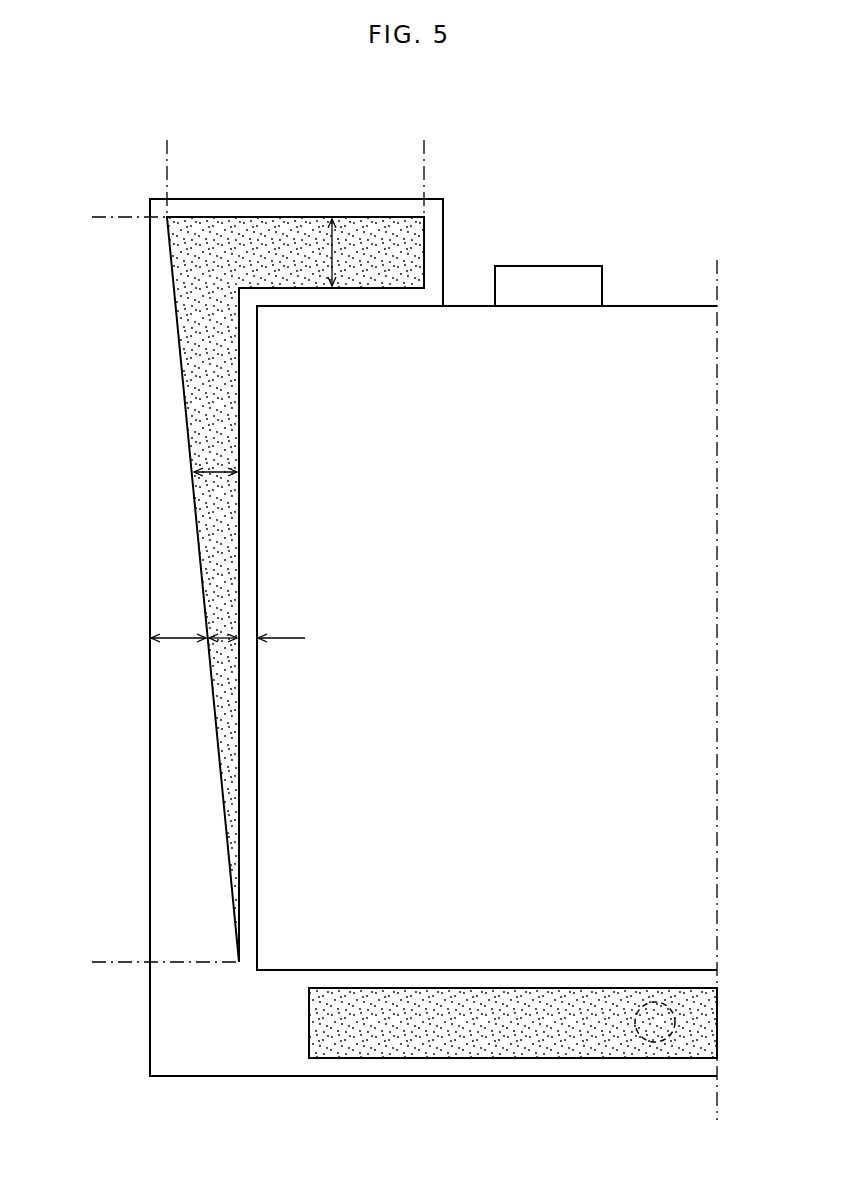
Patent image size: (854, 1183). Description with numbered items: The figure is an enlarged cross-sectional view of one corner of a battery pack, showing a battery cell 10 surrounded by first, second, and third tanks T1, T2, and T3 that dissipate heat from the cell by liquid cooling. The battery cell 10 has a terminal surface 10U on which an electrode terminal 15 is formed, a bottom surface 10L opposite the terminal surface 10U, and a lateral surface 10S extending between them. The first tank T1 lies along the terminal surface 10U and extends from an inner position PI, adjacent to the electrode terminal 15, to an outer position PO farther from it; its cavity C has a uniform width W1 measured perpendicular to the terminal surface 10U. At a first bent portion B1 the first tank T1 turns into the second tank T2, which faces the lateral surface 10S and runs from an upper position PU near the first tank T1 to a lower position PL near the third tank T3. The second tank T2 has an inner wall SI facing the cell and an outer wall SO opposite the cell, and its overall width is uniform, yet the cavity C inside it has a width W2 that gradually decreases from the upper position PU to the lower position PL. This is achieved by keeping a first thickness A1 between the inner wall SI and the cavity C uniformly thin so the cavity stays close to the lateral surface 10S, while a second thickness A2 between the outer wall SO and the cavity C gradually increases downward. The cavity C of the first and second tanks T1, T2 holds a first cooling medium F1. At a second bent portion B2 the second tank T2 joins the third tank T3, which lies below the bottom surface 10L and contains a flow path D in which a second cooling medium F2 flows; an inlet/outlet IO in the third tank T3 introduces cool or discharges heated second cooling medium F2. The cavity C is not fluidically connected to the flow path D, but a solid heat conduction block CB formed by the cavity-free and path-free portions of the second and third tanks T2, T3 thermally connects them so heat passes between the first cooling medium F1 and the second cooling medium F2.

The battery cell 10 is at (557, 632).
The electrode terminal 15 is at (550, 270).
The terminal surface 10U is at (655, 306).
The bottom surface 10L is at (573, 970).
The lateral surface 10S is at (256, 556).
The cavity C is at (231, 217).
The first cooling medium F1 is at (292, 248).
The second cooling medium F2 is at (430, 1027).
The first tank T1 is at (355, 199).
The second tank T2 is at (150, 665).
The third tank T3 is at (292, 1076).
The first bent portion B1 is at (150, 199).
The second bent portion B2 is at (150, 1076).
The heat conduction block CB is at (223, 1022).
The flow path D is at (513, 1060).
The outer wall SO is at (150, 778).
The inner wall SI is at (257, 778).
The inlet/outlet IO is at (655, 1042).
The upper position PU is at (111, 216).
The lower position PL is at (147, 962).
The outer position PO is at (166, 164).
The inner position PI is at (426, 164).
The width W1 is at (354, 252).
The width W2 is at (215, 456).
The first thickness A1 is at (283, 623).
The second thickness A2 is at (194, 623).